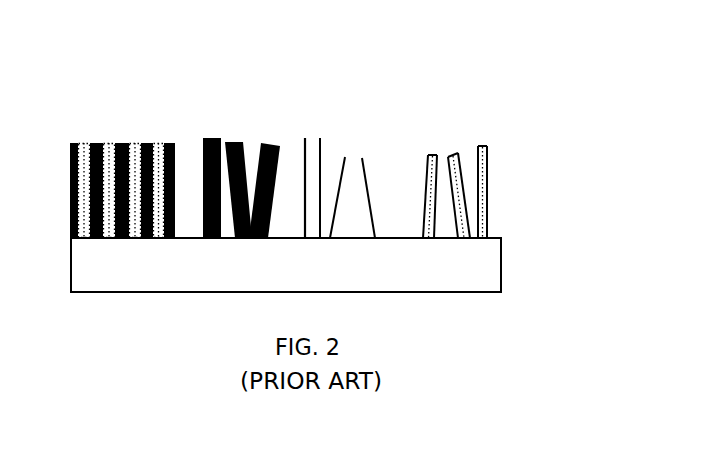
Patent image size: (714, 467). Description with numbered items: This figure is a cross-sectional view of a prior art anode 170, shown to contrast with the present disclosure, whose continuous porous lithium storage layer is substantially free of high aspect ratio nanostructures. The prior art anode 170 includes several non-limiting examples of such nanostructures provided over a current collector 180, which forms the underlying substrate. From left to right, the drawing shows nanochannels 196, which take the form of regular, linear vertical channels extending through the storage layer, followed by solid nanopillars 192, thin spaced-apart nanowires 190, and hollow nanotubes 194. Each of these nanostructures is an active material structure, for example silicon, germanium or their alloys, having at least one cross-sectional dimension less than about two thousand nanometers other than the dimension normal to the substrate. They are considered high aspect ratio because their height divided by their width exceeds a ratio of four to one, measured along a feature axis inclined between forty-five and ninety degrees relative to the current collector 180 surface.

The prior art anode 170 is at (508, 42).
The current collector 180 is at (483, 278).
The nanowires 190 is at (345, 157).
The nanopillars 192 is at (230, 142).
The nanotubes 194 is at (458, 152).
The nanochannels 196 is at (108, 143).